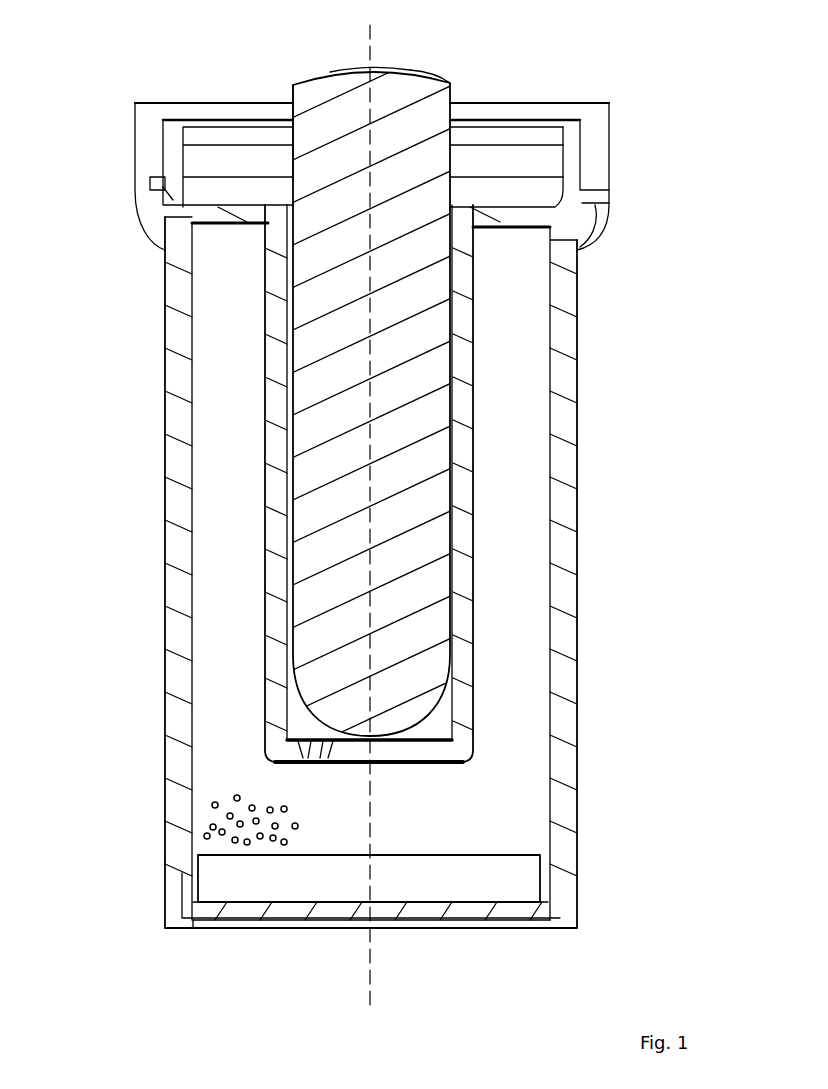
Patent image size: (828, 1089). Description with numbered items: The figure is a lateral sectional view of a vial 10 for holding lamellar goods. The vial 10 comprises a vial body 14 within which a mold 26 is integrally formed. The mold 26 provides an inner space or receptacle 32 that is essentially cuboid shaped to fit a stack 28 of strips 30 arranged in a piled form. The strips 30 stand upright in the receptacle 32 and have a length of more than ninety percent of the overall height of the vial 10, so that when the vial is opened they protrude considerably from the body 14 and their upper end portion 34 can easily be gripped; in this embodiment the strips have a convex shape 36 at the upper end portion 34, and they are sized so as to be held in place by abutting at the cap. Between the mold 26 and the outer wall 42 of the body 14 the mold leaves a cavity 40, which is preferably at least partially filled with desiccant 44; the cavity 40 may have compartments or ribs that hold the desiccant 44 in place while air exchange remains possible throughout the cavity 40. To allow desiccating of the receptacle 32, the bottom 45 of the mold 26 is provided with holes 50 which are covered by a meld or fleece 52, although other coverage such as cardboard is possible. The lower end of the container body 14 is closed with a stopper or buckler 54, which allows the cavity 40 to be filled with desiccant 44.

The vial 10 is at (120, 985).
The vial body 14 is at (163, 752).
The mold 26 is at (460, 580).
The stack 28 is at (313, 427).
The strips 30 is at (452, 92).
The inner space or receptacle 32 is at (321, 65).
The upper end portion 34 is at (318, 172).
The convex shape 36 is at (422, 76).
The cavity 40 is at (526, 710).
The outer wall 42 is at (576, 374).
The desiccant 44 is at (247, 840).
The bottom 45 is at (293, 727).
The holes 50 is at (340, 737).
The fleece 52 is at (450, 753).
The stopper or buckler 54 is at (222, 928).